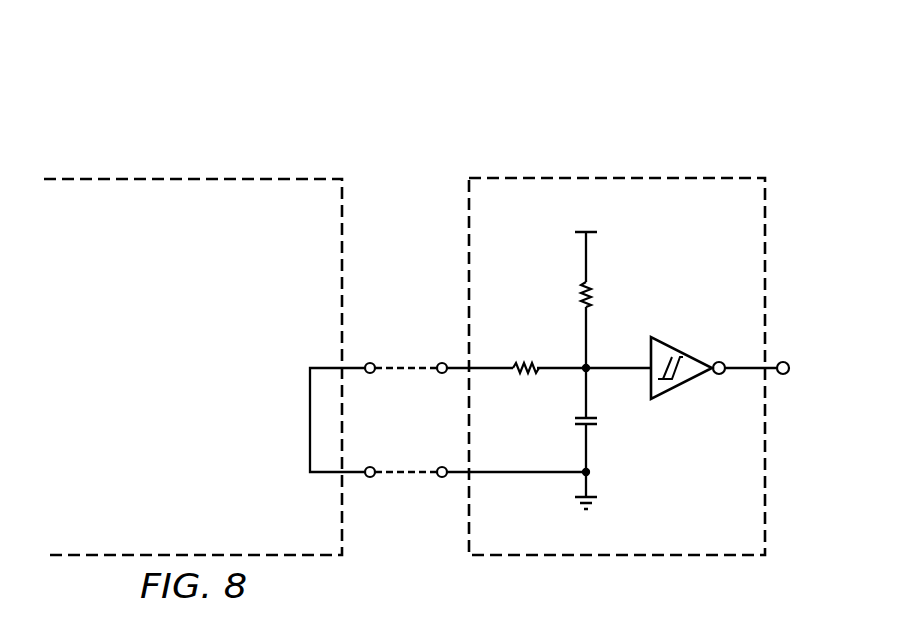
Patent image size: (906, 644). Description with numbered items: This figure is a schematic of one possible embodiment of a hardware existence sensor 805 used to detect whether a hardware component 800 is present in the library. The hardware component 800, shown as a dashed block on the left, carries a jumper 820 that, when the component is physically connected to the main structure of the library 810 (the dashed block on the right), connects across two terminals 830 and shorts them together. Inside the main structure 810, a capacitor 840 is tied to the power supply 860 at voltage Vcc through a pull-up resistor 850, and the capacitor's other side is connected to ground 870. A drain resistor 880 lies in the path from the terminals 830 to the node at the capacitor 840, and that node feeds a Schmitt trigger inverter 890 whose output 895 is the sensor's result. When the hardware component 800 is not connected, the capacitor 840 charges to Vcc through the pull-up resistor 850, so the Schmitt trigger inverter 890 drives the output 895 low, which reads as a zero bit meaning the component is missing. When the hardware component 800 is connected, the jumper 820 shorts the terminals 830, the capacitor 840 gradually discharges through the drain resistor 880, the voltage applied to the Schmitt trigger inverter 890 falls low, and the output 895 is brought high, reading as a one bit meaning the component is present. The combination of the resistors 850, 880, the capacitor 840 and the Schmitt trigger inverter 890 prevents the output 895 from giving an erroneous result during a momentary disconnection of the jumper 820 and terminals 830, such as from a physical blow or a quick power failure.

The hardware component 800 is at (171, 172).
The hardware existence sensor 805 is at (560, 74).
The main structure of the library 810 is at (718, 172).
The jumper 820 is at (310, 420).
The terminals 830 is at (442, 362).
The capacitor 840 is at (598, 420).
The pull-up resistor 850 is at (581, 290).
The power supply 860 is at (606, 220).
The ground 870 is at (596, 505).
The drain resistor 880 is at (523, 378).
The Schmitt trigger inverter 890 is at (684, 356).
The output 895 is at (785, 375).